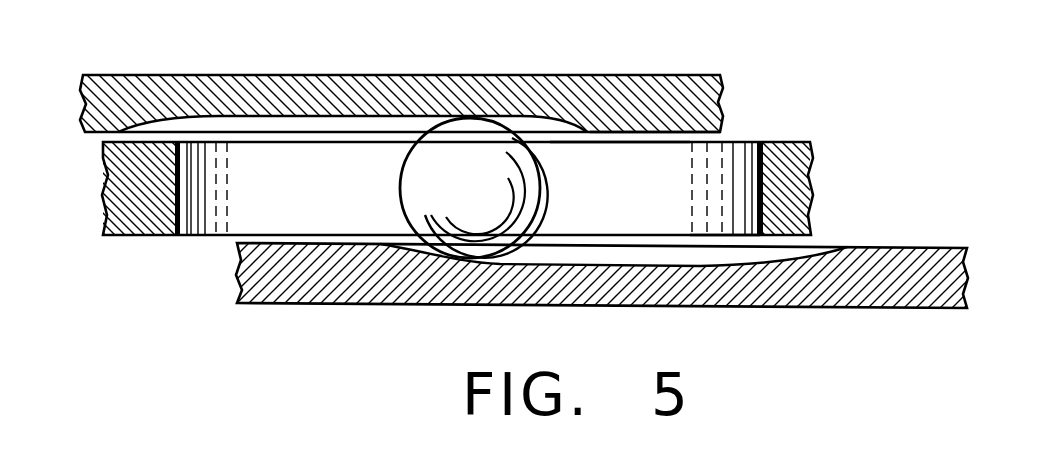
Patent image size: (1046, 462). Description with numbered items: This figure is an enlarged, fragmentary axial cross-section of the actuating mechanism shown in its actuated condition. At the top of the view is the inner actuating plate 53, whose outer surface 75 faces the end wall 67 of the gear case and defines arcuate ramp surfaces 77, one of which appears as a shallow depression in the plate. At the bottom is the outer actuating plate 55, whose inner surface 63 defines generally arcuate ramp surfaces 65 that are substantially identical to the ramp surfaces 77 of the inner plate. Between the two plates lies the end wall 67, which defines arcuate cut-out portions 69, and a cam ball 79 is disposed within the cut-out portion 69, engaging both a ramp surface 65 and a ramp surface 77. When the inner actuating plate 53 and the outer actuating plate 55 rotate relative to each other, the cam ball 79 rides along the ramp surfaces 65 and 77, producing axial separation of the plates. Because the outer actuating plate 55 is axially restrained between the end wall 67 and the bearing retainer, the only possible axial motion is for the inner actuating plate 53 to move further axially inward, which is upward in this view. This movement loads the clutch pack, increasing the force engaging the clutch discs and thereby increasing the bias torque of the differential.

The inner actuating plate 53 is at (256, 93).
The outer actuating plate 55 is at (868, 283).
The inner surface 63 is at (290, 247).
The ramp surfaces 65 is at (718, 262).
The end wall 67 is at (793, 192).
The cut-out portions 69 is at (652, 190).
The outer surface 75 is at (678, 142).
The ramp surfaces 77 is at (278, 114).
The cam balls 79 is at (435, 174).